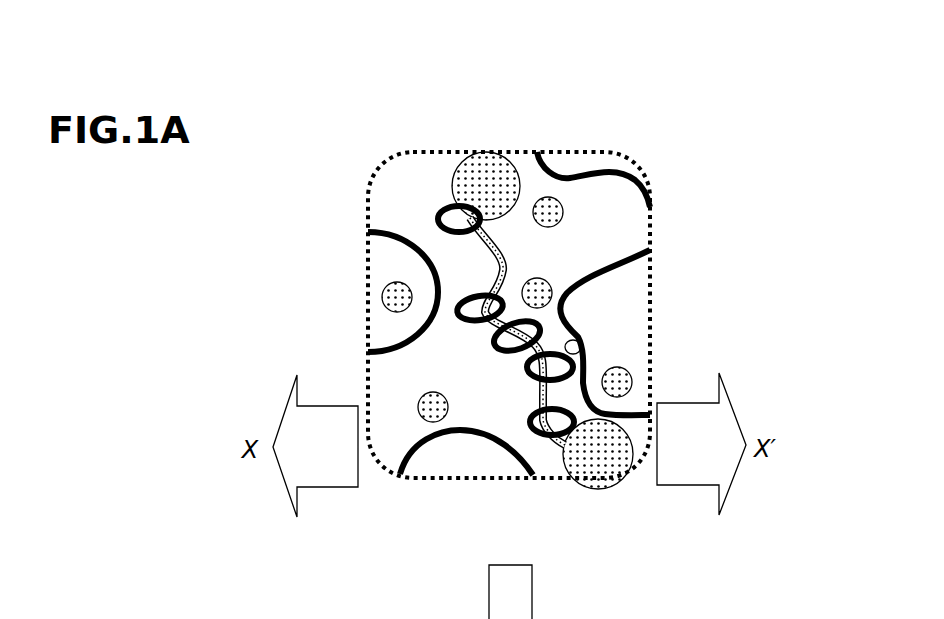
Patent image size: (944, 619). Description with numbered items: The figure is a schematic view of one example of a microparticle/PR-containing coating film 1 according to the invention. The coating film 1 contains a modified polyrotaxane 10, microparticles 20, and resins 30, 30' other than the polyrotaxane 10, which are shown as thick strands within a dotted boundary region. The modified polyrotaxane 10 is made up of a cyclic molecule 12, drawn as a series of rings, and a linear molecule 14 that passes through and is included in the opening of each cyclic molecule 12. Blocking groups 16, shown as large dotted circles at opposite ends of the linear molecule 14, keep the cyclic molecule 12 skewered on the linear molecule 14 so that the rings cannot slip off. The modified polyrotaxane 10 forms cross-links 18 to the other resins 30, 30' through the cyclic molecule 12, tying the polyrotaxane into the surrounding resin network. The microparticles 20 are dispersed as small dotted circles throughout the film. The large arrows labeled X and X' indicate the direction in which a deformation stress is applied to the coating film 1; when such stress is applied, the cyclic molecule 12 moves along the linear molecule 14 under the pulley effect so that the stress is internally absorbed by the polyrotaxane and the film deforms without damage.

The microparticle/PR-containing coating film 1 is at (676, 85).
The modified polyrotaxane 10 is at (562, 255).
The cyclic molecule 12 is at (445, 208).
The linear molecule 14 is at (490, 263).
The blocking groups 16 is at (478, 174).
The cross-links 18 is at (577, 337).
The microparticles 20 is at (553, 198).
The resin 30 is at (345, 301).
The wire 30' is at (578, 313).